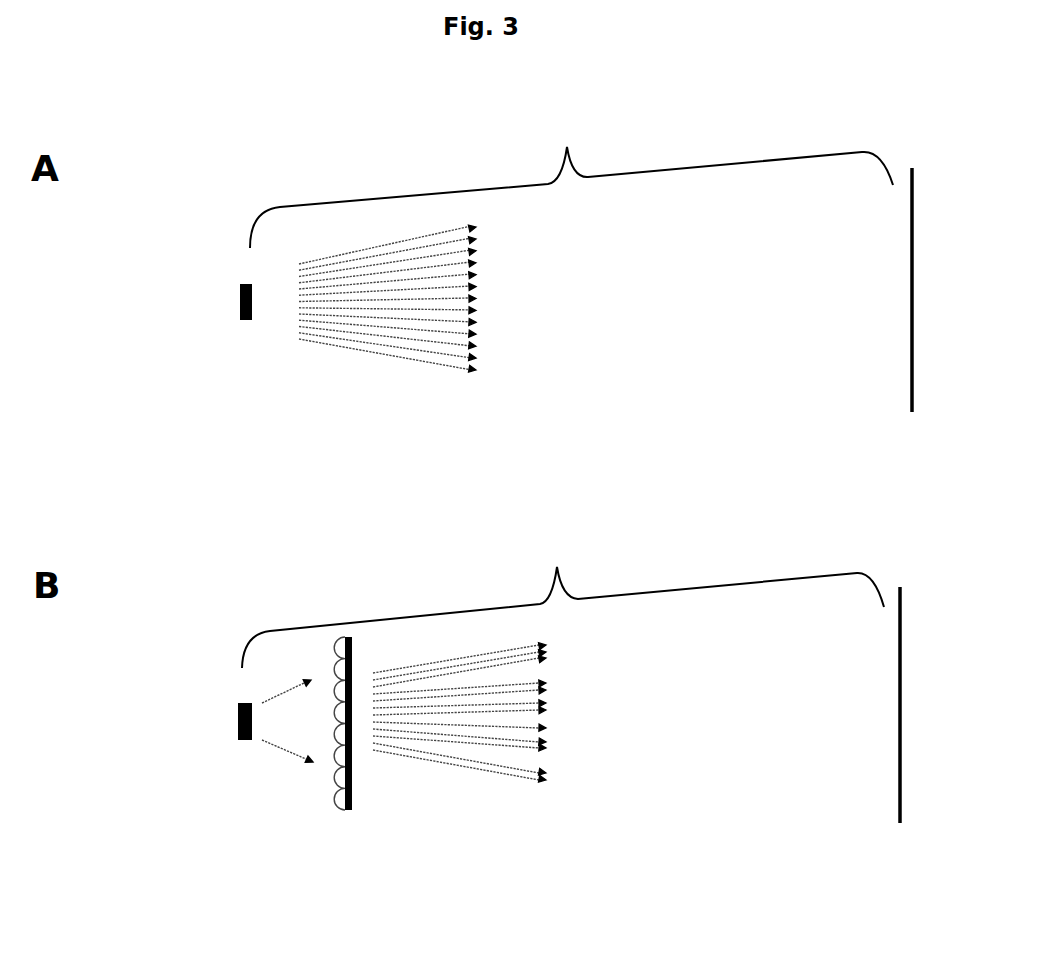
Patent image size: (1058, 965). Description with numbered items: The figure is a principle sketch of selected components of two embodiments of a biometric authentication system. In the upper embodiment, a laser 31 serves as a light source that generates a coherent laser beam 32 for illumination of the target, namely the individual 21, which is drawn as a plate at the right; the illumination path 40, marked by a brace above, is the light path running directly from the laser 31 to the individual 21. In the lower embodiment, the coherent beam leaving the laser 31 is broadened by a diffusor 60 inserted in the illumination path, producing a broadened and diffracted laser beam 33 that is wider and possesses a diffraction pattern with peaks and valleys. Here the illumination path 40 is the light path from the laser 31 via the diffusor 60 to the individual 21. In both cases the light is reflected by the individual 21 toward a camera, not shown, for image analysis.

The individual 21 is at (908, 430).
The laser 31 is at (247, 327).
The coherent laser beam 32 is at (473, 380).
The broadened and diffracted laser beam 33 is at (517, 777).
The illumination path 40 is at (567, 392).
The diffusor 60 is at (345, 818).